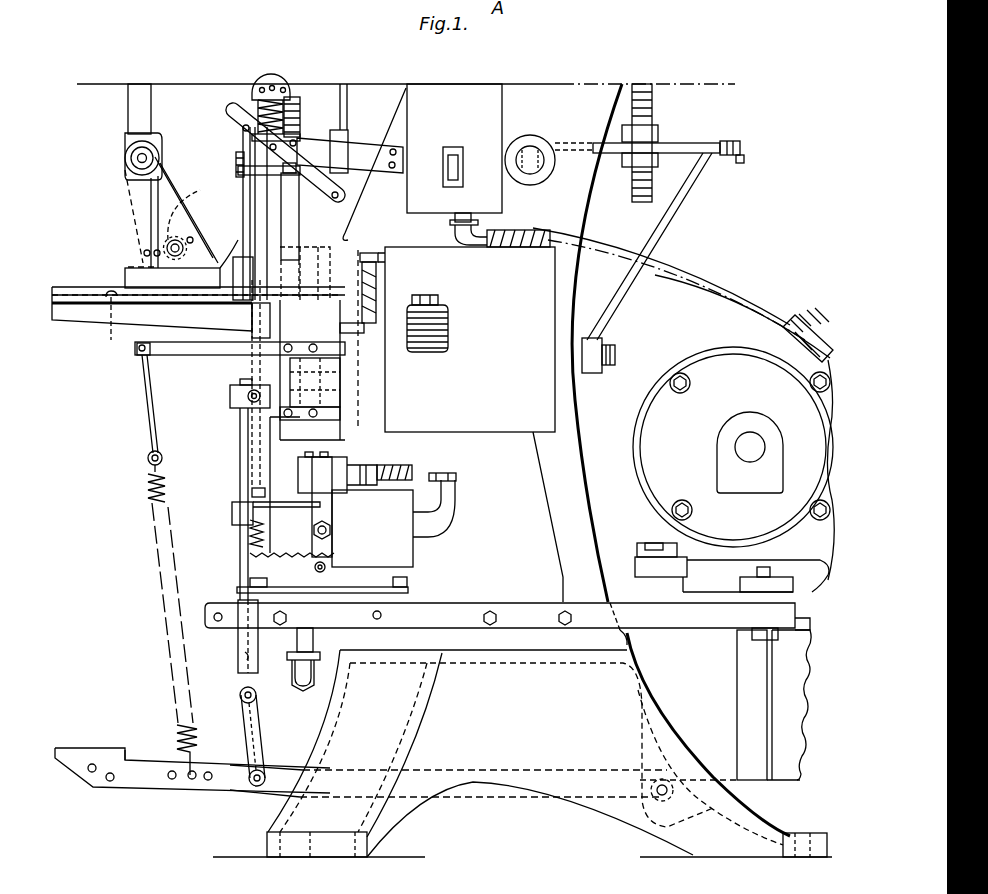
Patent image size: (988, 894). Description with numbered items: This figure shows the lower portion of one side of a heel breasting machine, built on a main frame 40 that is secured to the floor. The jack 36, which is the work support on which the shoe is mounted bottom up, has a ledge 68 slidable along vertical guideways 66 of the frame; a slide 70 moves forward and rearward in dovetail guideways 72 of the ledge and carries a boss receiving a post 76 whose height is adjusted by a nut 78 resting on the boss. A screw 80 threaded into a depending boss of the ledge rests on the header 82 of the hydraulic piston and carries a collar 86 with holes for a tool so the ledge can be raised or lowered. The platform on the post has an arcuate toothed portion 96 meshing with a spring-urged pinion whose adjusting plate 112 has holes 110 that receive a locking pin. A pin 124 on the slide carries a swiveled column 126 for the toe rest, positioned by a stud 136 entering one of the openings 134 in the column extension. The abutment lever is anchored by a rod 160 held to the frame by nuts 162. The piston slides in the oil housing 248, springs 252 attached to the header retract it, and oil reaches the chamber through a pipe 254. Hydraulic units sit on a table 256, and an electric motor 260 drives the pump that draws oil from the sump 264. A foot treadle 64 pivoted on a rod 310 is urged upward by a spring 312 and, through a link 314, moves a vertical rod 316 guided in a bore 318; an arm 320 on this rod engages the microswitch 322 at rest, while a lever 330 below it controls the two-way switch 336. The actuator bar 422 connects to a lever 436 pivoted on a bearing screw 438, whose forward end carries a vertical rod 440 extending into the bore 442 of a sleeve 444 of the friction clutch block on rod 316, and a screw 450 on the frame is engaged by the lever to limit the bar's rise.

The jack 36 is at (95, 122).
The column 126 is at (127, 115).
The pin 124 is at (132, 160).
The slide 70 is at (125, 283).
The stud 136 is at (181, 243).
The openings 134 is at (197, 236).
The nut 78 is at (237, 158).
The post 76 is at (258, 110).
The adjusting plate 112 is at (264, 83).
The holes 110 is at (283, 87).
The arcuate toothed portion 96 is at (307, 86).
The screw 450 is at (299, 128).
The actuator bar 422 is at (348, 110).
The bearing screw 438 is at (274, 231).
The lever 436 is at (315, 190).
The vertical rod 440 is at (247, 240).
The rod 160 is at (650, 97).
The nuts 162 is at (655, 155).
The ledge 68 is at (83, 312).
The dovetail guideways 72 is at (112, 340).
The screw 80 is at (253, 320).
The header 82 is at (277, 390).
The collar 86 is at (335, 374).
The vertical guideways 66 is at (327, 380).
The vertical bore 442 is at (248, 427).
The oil housing 248 is at (273, 433).
The sleeve 444 is at (248, 468).
The springs 252 is at (240, 527).
The vertical rod 316 is at (242, 538).
The spring 312 is at (150, 497).
The microswitch 322 is at (293, 484).
The arm 320 is at (263, 510).
The two-way switch 336 is at (422, 553).
The main frame 40 is at (571, 490).
The electric motor 260 is at (690, 353).
The lever 330 is at (283, 562).
The bore 318 is at (238, 660).
The link 314 is at (257, 737).
The foot treadle 64 is at (222, 790).
The pipe 254 is at (310, 642).
The table 256 is at (705, 622).
The sump 264 is at (706, 707).
The rod 310 is at (666, 786).